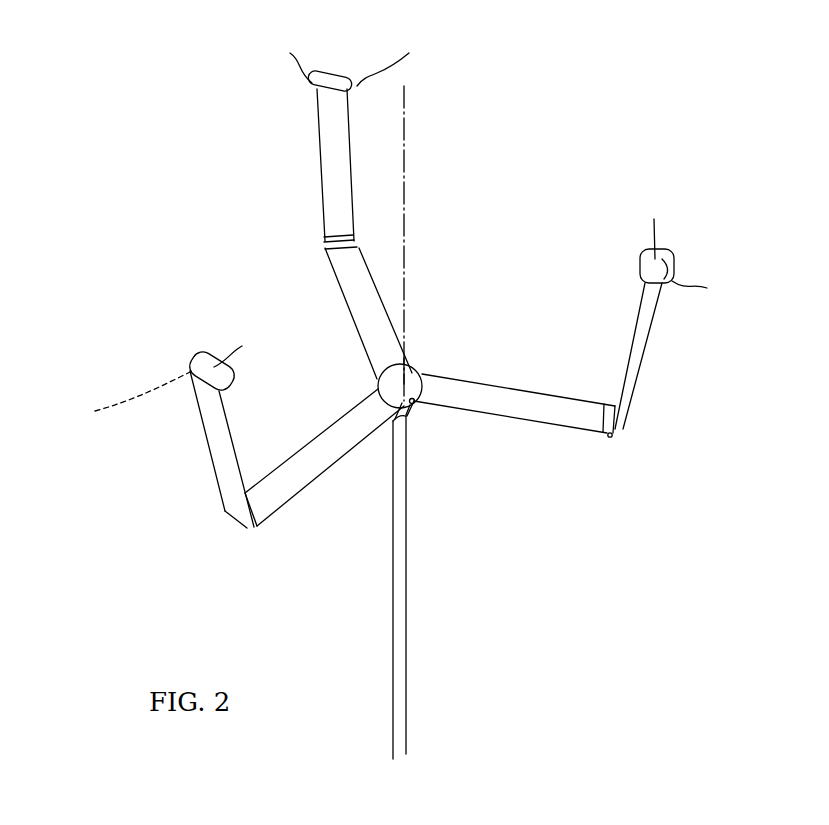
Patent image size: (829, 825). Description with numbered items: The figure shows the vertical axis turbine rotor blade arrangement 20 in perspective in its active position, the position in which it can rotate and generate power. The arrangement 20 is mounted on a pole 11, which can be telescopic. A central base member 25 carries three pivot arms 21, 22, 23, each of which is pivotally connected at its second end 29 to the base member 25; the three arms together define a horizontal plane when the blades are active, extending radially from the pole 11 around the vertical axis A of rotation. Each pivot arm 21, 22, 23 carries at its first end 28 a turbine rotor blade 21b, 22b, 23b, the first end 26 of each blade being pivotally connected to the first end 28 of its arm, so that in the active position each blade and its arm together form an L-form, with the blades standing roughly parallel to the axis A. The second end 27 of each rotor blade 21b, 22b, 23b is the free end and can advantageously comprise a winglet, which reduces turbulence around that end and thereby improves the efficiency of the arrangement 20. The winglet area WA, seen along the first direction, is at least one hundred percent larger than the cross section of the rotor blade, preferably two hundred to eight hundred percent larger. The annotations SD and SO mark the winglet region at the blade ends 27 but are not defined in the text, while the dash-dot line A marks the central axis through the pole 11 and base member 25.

The turbine rotor blade arrangement 20 is at (428, 276).
The pivot arm 21 is at (290, 470).
The turbine rotor blade 21b is at (208, 447).
The pivot arm 22 is at (360, 310).
The turbine rotor blade 22b is at (318, 162).
The pivot arm 23 is at (477, 405).
The turbine rotor blade 23b is at (643, 350).
The base member 25 is at (413, 404).
The first end of turbine rotor blade 26 is at (348, 240).
The second end of turbine rotor blade 27 is at (322, 72).
The first end of pivot arm 28 is at (322, 242).
The second end of pivot arm 29 is at (375, 378).
The pole 11 is at (405, 565).
The axis of rotation A is at (403, 126).
The sensor direction SD is at (263, 192).
The sensor orientation SO is at (665, 225).
The winglet area WA is at (394, 231).